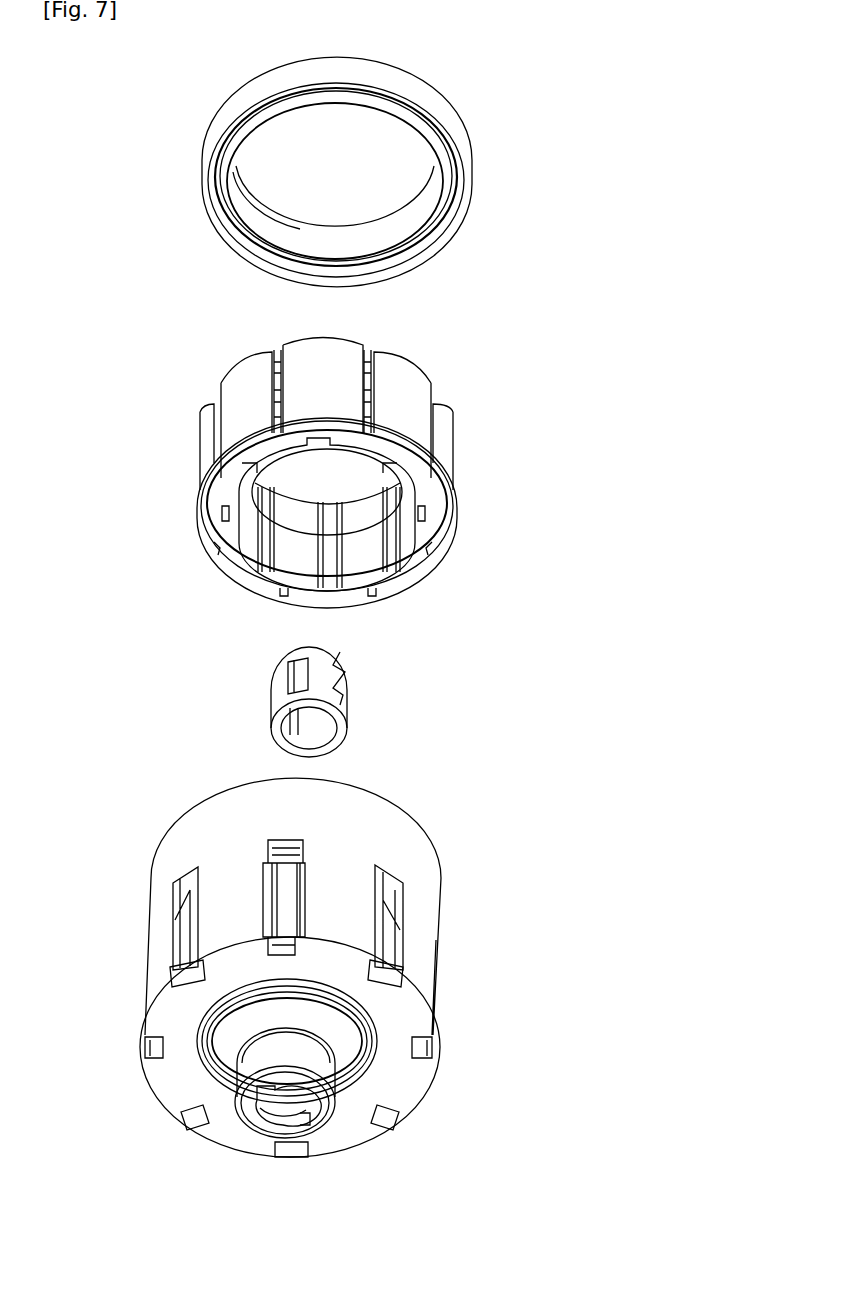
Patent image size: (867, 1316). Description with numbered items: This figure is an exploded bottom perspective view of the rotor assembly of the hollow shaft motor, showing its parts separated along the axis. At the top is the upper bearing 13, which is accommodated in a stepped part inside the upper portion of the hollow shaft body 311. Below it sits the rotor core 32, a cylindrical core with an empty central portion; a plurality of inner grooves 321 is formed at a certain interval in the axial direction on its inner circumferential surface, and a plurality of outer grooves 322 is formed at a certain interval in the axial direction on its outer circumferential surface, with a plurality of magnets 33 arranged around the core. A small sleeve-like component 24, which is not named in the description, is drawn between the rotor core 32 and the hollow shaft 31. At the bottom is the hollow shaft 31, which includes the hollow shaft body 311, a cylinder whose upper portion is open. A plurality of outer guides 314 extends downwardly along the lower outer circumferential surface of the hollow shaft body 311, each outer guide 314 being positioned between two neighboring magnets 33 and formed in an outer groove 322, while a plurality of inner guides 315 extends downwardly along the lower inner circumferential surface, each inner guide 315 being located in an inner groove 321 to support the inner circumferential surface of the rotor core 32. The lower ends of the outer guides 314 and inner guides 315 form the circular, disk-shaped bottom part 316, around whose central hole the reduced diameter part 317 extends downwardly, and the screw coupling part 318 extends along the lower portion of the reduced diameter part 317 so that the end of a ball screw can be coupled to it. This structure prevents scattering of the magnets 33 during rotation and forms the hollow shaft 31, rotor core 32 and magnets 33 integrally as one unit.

The upper bearing 13 is at (455, 128).
The sleeve 24 is at (345, 688).
The hollow shaft 31 is at (297, 981).
The hollow shaft body 311 is at (393, 823).
The outer guide 314 is at (218, 915).
The inner guide 315 is at (288, 877).
The bottom part 316 is at (162, 1017).
The reduced diameter part 317 is at (203, 1068).
The screw coupling part 318 is at (323, 1117).
The rotor core 32 is at (319, 516).
The inner groove 321 is at (258, 563).
The outer groove 322 is at (430, 547).
The magnet 33 is at (412, 378).